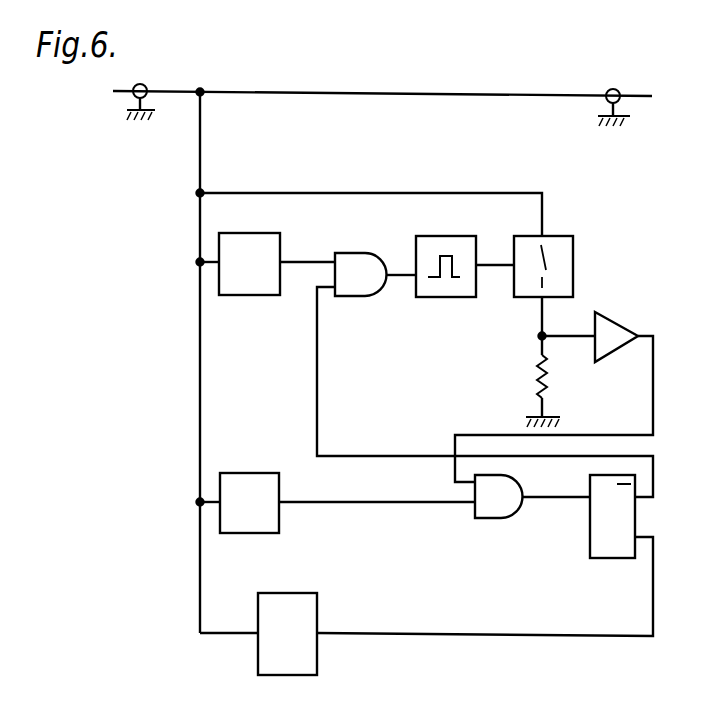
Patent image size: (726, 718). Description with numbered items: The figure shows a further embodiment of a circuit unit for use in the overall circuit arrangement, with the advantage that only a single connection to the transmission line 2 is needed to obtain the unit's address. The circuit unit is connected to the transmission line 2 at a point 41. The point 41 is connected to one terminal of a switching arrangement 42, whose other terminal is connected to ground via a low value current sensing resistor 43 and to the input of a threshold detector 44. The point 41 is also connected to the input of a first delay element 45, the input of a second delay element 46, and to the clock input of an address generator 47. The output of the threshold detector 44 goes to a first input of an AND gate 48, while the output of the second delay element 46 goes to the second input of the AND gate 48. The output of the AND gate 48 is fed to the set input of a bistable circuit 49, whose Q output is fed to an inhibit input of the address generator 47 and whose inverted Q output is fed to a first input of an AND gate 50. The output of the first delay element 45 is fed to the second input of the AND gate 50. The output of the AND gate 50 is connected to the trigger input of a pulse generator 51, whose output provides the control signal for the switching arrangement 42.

The transmission line 2 is at (146, 86).
The point 41 is at (201, 90).
The switching arrangement 42 is at (575, 244).
The low value current sensing resistor 43 is at (552, 381).
The threshold detector 44 is at (623, 325).
The first delay element 45 is at (262, 233).
The second delay element 46 is at (280, 522).
The address generator 47 is at (319, 606).
The AND gate 48 is at (499, 519).
The bistable circuit 49 is at (590, 517).
The AND gate 50 is at (352, 251).
The pulse generator 51 is at (437, 236).